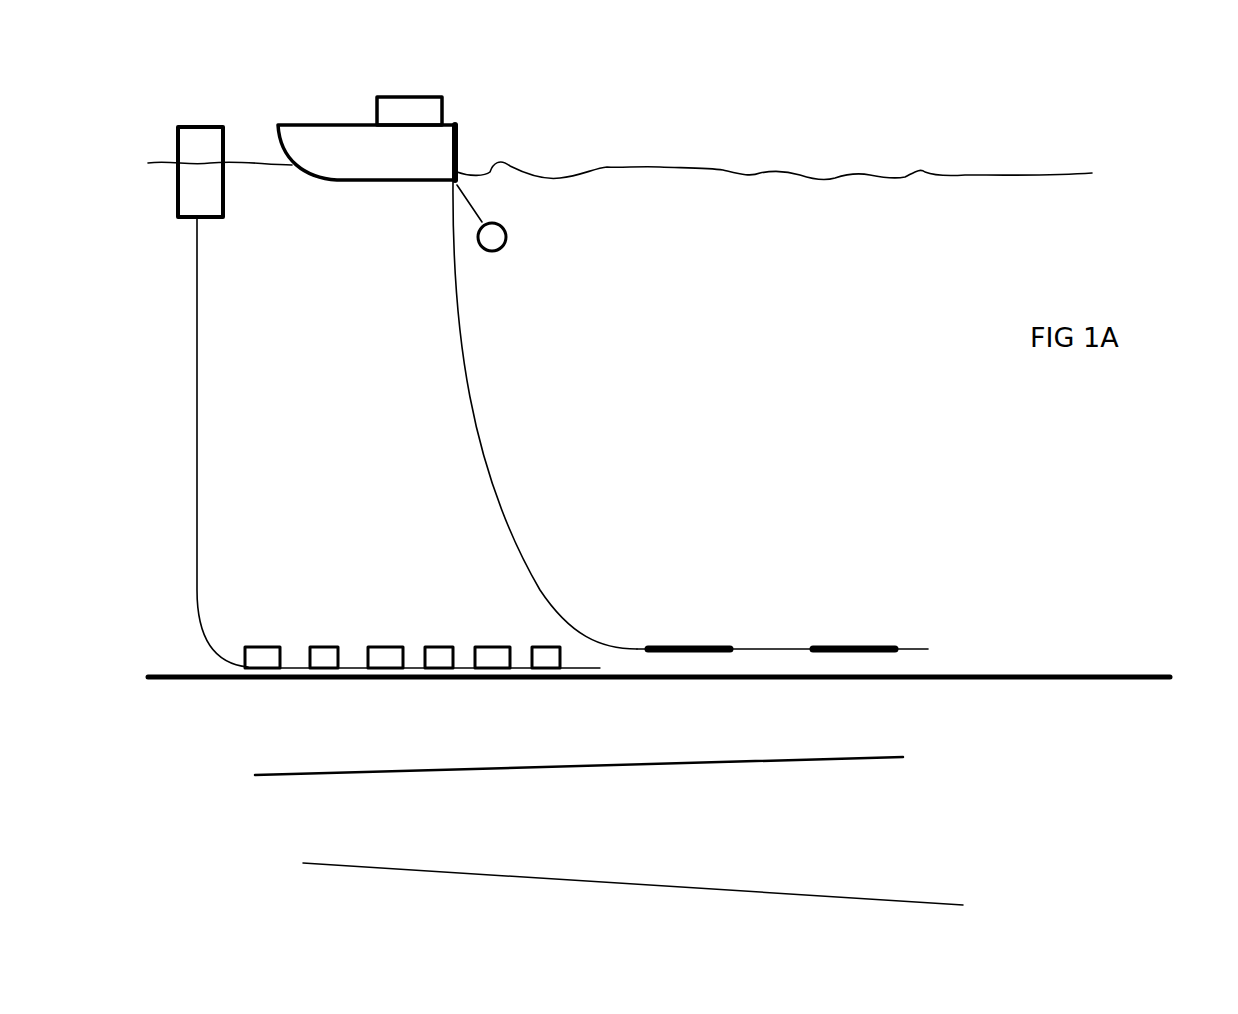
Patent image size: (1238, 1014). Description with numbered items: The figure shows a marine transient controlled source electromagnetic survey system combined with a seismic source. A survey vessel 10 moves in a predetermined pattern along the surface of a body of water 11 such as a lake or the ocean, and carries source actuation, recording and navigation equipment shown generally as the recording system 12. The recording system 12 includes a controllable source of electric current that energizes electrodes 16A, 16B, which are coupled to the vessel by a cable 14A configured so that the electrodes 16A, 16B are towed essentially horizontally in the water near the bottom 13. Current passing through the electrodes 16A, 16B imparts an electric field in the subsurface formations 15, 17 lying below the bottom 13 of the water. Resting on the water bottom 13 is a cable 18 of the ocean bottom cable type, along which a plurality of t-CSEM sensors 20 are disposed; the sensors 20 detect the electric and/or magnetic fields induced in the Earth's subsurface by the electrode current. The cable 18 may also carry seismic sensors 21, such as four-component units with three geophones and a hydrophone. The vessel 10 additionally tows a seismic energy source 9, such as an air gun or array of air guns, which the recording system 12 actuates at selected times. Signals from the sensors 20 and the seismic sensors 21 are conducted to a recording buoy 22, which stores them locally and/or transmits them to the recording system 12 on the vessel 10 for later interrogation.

The seismic energy source 9 is at (499, 250).
The survey vessel 10 is at (320, 138).
The body of water 11 is at (723, 170).
The recording system 12 is at (418, 102).
The water bottom 13 is at (923, 677).
The cable 14A is at (468, 403).
The subsurface formation 15 is at (583, 768).
The electrode 16A is at (677, 645).
The electrode 16B is at (840, 645).
The subsurface formation 17 is at (747, 893).
The cable 18 is at (197, 422).
The t-CSEM sensor 20 is at (272, 645).
The seismic sensor 21 is at (335, 645).
The recording buoy 22 is at (200, 125).